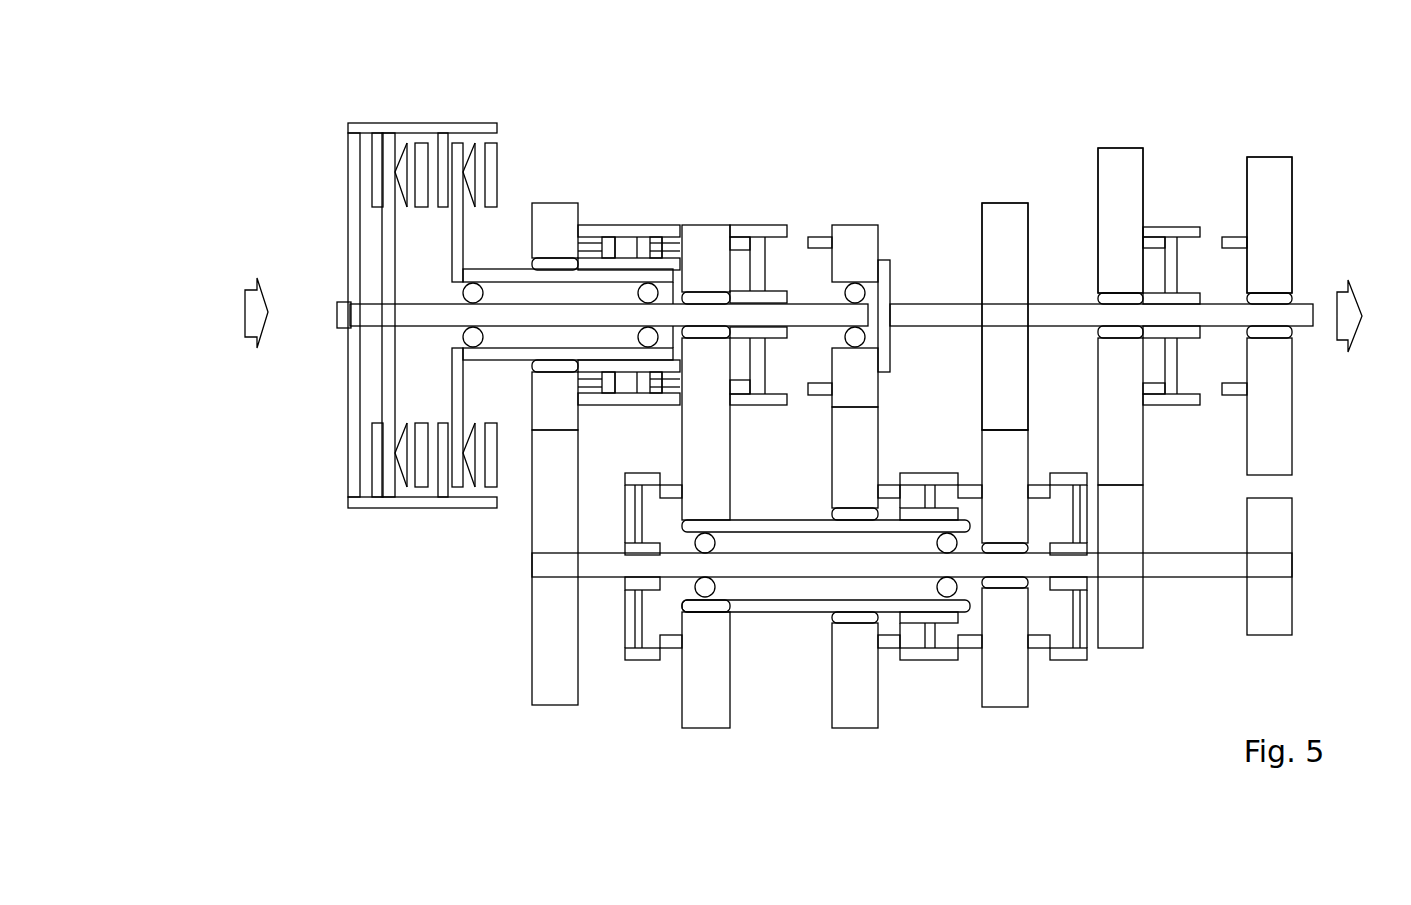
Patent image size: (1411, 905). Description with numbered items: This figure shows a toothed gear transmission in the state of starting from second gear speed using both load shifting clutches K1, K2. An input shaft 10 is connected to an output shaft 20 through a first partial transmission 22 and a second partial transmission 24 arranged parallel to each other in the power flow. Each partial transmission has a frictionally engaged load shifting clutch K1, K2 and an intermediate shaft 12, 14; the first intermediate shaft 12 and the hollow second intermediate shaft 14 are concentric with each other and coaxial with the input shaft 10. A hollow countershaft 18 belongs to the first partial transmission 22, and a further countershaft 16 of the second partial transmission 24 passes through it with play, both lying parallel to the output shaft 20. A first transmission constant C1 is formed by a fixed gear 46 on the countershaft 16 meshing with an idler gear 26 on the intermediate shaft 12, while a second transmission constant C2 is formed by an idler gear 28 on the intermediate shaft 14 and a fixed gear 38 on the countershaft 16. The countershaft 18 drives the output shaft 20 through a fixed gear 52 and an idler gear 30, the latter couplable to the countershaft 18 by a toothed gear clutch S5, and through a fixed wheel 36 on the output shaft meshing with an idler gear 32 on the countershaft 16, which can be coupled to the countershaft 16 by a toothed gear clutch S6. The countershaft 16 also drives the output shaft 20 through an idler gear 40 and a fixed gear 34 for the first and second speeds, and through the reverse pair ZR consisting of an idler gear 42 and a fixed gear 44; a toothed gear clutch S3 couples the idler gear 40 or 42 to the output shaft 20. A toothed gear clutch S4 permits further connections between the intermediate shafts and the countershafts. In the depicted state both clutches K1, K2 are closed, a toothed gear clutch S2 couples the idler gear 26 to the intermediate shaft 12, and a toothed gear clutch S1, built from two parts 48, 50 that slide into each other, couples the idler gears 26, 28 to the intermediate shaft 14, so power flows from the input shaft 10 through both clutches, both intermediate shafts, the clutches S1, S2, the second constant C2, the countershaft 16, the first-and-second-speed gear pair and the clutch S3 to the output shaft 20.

The input shaft 10 is at (347, 315).
The first intermediate shaft 12 is at (395, 316).
The second intermediate shaft 14 is at (485, 266).
The countershaft 16 is at (613, 565).
The countershaft 18 is at (705, 612).
The output shaft 20 is at (1290, 315).
The first partial transmission 22 is at (808, 787).
The second partial transmission 24 is at (1131, 787).
The idler gear 26 is at (707, 380).
The idler gear 28 is at (568, 405).
The idler gear 30 is at (855, 442).
The idler gear 32 is at (1005, 463).
The fixed gear 34 is at (1132, 522).
The fixed wheel 36 is at (993, 260).
The fixed gear 38 is at (555, 682).
The idler gear 40 is at (1120, 237).
The idler gear 42 is at (1268, 192).
The fixed gear 44 is at (1268, 533).
The fixed gear 46 is at (705, 683).
The part of toothed gear clutch S1 48 is at (602, 223).
The part of toothed gear clutch S1 50 is at (658, 223).
The fixed gear 52 is at (853, 390).
The first load shifting clutch K1 is at (393, 485).
The second load shifting clutch K2 is at (463, 485).
The first transmission constant C1 is at (705, 212).
The second transmission constant C2 is at (552, 192).
The toothed gear clutch S1 is at (637, 223).
The toothed gear clutch S2 is at (763, 223).
The toothed gear clutch S3 is at (1177, 225).
The toothed gear clutch S4 is at (648, 660).
The toothed gear clutch S5 is at (925, 660).
The toothed gear clutch S6 is at (1063, 660).
The toothed gear pair ZR is at (1268, 150).